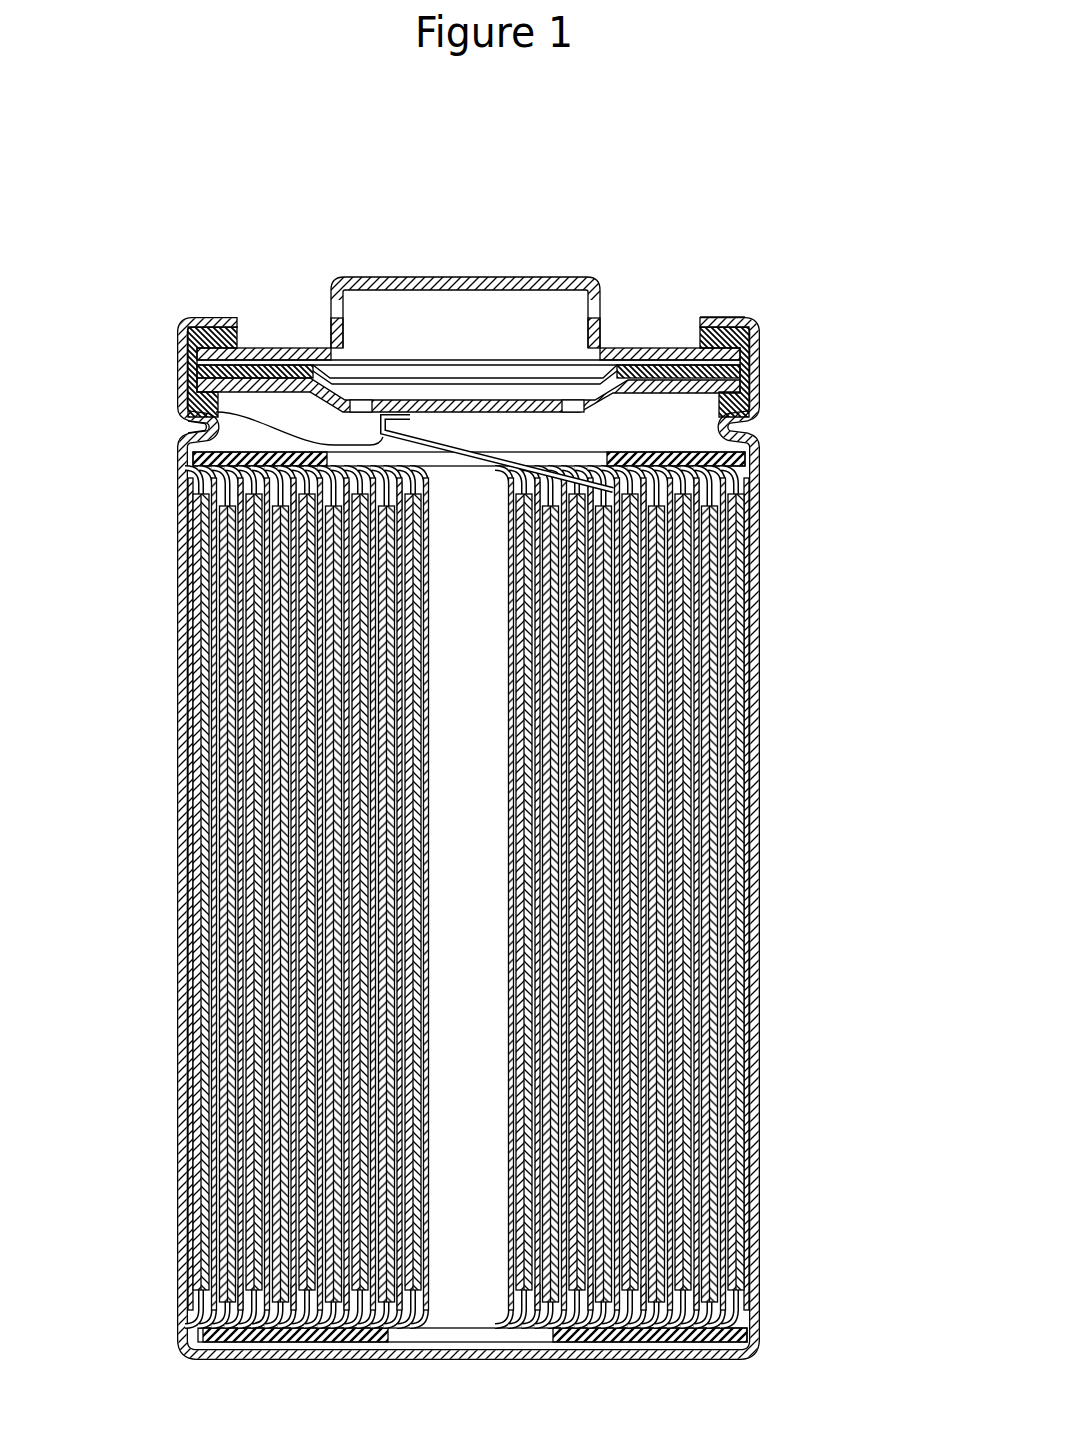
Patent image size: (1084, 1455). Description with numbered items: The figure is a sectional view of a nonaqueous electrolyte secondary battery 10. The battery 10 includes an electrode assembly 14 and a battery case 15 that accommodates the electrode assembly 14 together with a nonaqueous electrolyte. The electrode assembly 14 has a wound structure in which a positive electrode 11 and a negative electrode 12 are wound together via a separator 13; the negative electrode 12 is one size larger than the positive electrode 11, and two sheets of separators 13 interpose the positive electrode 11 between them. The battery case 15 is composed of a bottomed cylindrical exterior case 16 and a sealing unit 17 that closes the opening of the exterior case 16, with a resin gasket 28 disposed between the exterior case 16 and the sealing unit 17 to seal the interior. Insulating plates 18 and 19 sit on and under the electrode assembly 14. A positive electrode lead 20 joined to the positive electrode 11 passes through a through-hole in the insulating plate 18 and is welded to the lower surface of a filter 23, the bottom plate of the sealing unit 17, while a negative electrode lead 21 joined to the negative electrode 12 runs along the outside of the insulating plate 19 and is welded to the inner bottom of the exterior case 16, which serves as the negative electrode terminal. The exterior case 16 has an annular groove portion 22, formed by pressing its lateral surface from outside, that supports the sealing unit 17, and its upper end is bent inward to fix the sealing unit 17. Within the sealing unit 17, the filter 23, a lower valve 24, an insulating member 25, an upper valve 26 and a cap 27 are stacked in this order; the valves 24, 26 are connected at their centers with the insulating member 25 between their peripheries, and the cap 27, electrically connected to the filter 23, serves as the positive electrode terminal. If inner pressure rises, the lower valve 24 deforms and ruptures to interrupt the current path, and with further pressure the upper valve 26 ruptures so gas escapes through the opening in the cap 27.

The nonaqueous electrolyte secondary battery 10 is at (778, 121).
The positive electrode 11 is at (709, 998).
The negative electrode 12 is at (735, 1022).
The separator 13 is at (722, 1068).
The electrode assembly 14 is at (499, 901).
The battery case 15 is at (471, 258).
The exterior case 16 is at (722, 262).
The sealing unit 17 is at (637, 347).
The insulating plate 18 is at (750, 465).
The insulating plate 19 is at (749, 1338).
The positive electrode lead 20 is at (176, 404).
The negative electrode lead 21 is at (200, 1335).
The groove portion 22 is at (176, 432).
The filter 23 is at (466, 400).
The lower valve 24 is at (352, 365).
The insulating member 25 is at (270, 350).
The upper valve 26 is at (373, 362).
The cap 27 is at (550, 278).
The gasket 28 is at (762, 343).